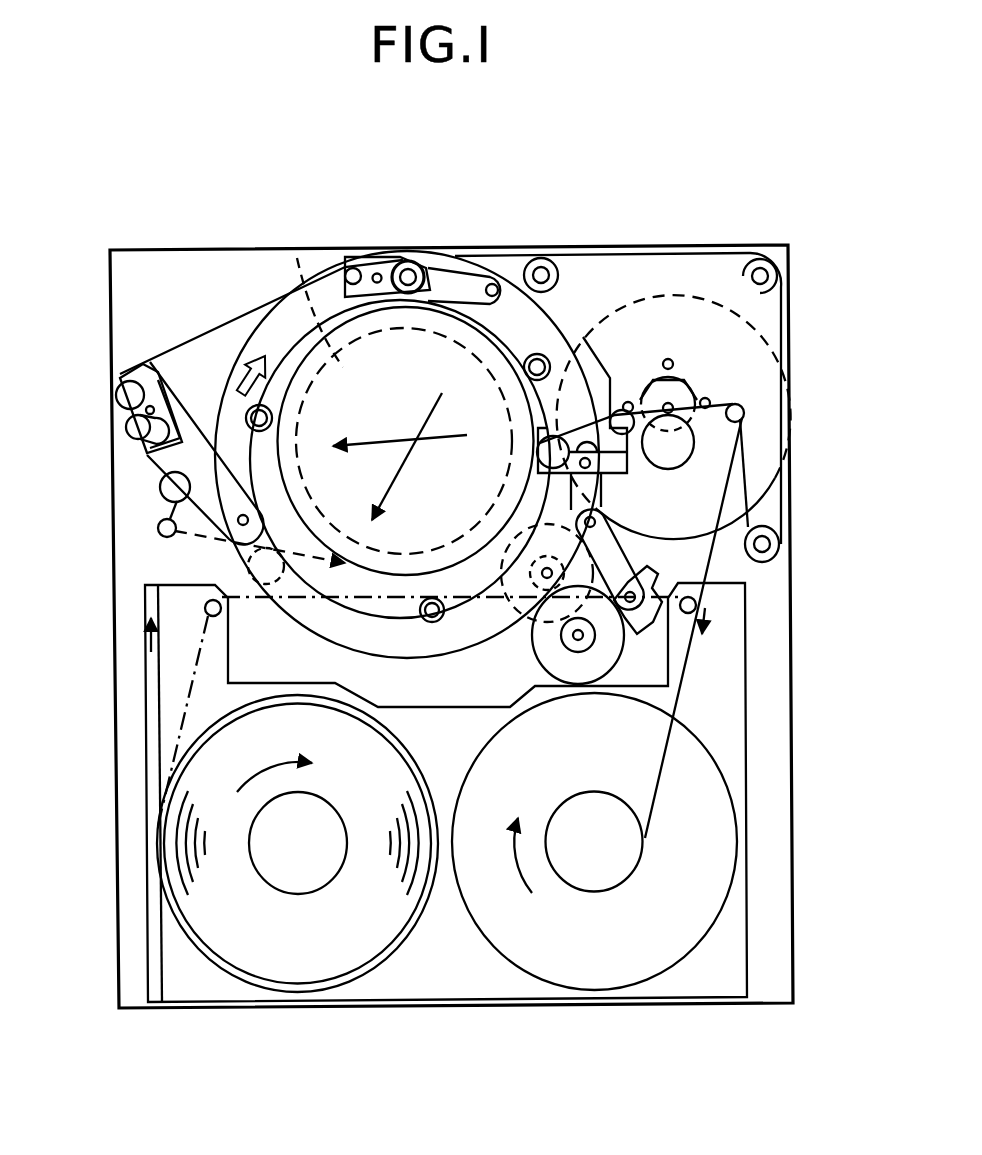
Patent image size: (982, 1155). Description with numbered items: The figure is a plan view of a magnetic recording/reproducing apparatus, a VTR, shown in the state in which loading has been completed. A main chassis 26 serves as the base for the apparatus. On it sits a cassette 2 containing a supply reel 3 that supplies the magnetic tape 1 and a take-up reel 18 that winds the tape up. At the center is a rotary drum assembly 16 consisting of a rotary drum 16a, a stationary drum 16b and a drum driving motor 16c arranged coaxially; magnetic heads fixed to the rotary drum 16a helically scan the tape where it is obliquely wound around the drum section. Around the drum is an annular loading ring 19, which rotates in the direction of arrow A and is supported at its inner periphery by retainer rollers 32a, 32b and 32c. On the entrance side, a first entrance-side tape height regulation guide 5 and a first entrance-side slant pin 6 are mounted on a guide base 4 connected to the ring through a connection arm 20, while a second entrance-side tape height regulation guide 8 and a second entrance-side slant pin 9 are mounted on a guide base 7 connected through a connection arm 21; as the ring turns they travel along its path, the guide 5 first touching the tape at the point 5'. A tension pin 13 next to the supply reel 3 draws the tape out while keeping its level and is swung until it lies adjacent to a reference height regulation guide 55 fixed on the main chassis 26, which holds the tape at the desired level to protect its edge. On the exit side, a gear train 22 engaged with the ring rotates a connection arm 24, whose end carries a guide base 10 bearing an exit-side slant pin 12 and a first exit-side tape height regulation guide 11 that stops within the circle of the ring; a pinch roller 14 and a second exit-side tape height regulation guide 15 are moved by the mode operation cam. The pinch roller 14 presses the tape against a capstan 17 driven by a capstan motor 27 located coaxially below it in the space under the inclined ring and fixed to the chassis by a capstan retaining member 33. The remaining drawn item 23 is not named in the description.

The magnetic tape 1 is at (247, 318).
The cassette 2 is at (178, 962).
The supply reel 3 is at (282, 880).
The guide base 4 is at (352, 258).
The first entrance-side tape height regulation guide 5 is at (408, 236).
The point on the loading ring rotation path 5' is at (263, 606).
The first entrance-side slant pin 6 is at (326, 270).
The guide base 7 is at (122, 374).
The second entrance-side tape height regulation guide 8 is at (122, 398).
The second entrance-side slant pin 9 is at (132, 434).
The guide base 10 is at (628, 452).
The first exit-side tape height regulation guide 11 is at (537, 455).
The exit-side slant pin 12 is at (622, 408).
The tension pin 13 is at (158, 530).
The pinch roller 14 is at (674, 450).
The second exit-side tape height regulation guide 15 is at (734, 403).
The rotary drum assembly 16 is at (308, 575).
The rotary drum 16a is at (400, 575).
The stationary drum 16b is at (293, 300).
The drum driving motor 16c is at (462, 350).
The capstan 17 is at (670, 398).
The take-up reel 18 is at (597, 878).
The loading ring 19 is at (518, 300).
The connection arm 20 is at (456, 290).
The connection arm 21 is at (214, 492).
The gear train 22 is at (485, 592).
The pinch roller lever 23 is at (648, 556).
The connection arm 24 is at (637, 610).
The main chassis 26 is at (765, 925).
The capstan motor 27 is at (680, 288).
The retainer roller 32a is at (544, 356).
The retainer roller 32b is at (251, 408).
The retainer roller 32c is at (432, 622).
The capstan retaining member 33 is at (783, 305).
The reference height regulation guide 55 is at (165, 488).